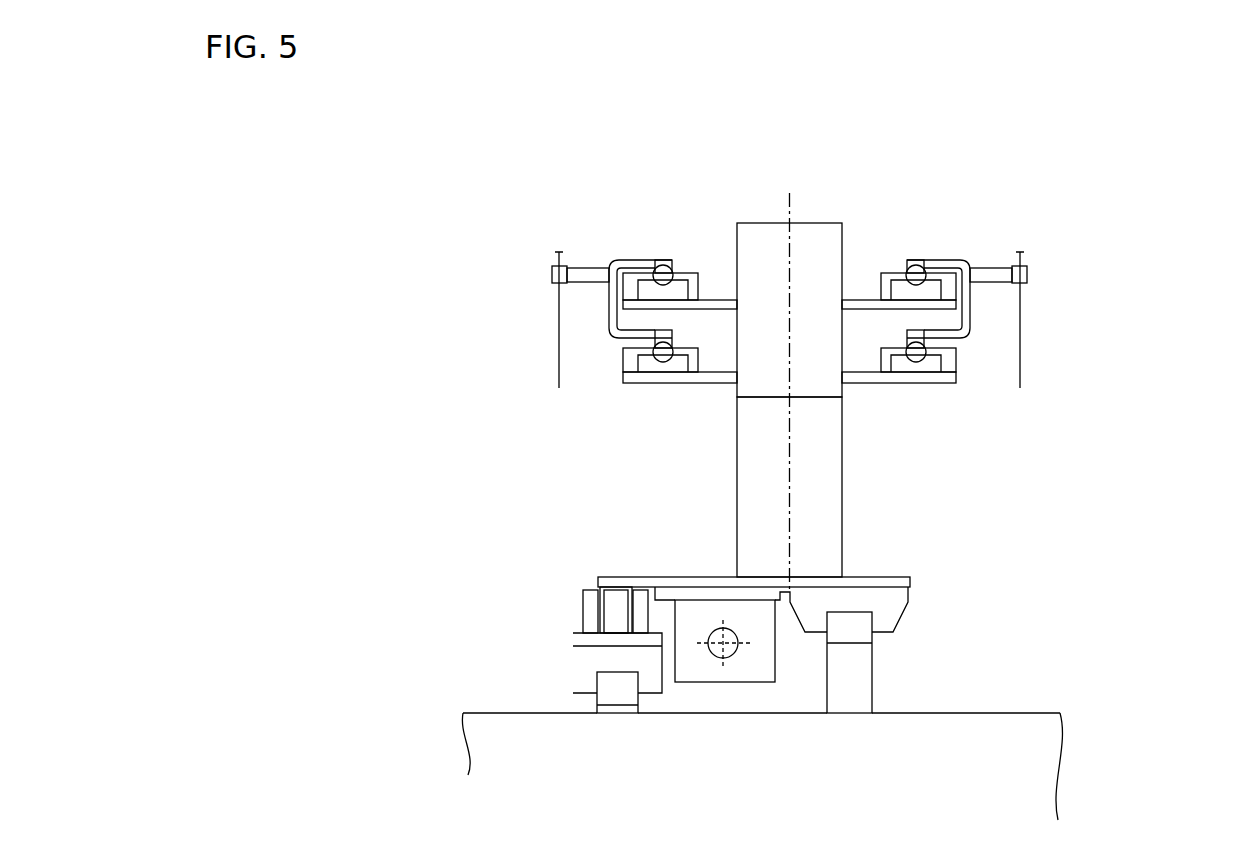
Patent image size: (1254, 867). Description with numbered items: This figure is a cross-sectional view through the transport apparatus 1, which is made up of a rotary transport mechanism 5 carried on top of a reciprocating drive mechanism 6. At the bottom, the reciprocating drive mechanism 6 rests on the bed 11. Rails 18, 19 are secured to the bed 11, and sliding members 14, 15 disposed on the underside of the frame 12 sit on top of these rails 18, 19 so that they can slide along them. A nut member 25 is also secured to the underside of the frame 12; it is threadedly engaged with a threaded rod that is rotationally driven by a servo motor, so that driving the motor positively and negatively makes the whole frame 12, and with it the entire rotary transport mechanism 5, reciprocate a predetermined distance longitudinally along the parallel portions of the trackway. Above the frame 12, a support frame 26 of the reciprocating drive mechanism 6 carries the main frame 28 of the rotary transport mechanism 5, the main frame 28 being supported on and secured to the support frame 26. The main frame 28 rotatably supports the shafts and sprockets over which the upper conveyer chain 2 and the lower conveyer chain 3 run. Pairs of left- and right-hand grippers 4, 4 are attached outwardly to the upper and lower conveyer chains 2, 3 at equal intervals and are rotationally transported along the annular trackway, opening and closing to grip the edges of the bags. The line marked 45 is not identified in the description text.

The transport apparatus 1 is at (864, 311).
The upper conveyer chain 2 is at (660, 265).
The lower conveyer chain 3 is at (664, 357).
The gripper 4 is at (553, 268).
The rotary transport mechanism 5 is at (869, 313).
The reciprocating drive mechanism 6 is at (806, 672).
The bed 11 is at (1008, 727).
The frame 12 is at (872, 578).
The sliding member 14 is at (585, 657).
The sliding member 15 is at (893, 605).
The rail 18 is at (615, 695).
The rail 19 is at (860, 635).
The nut member 25 is at (753, 673).
The support frame 26 is at (830, 471).
The main frame 28 is at (816, 243).
The reference plane 45 is at (1022, 334).